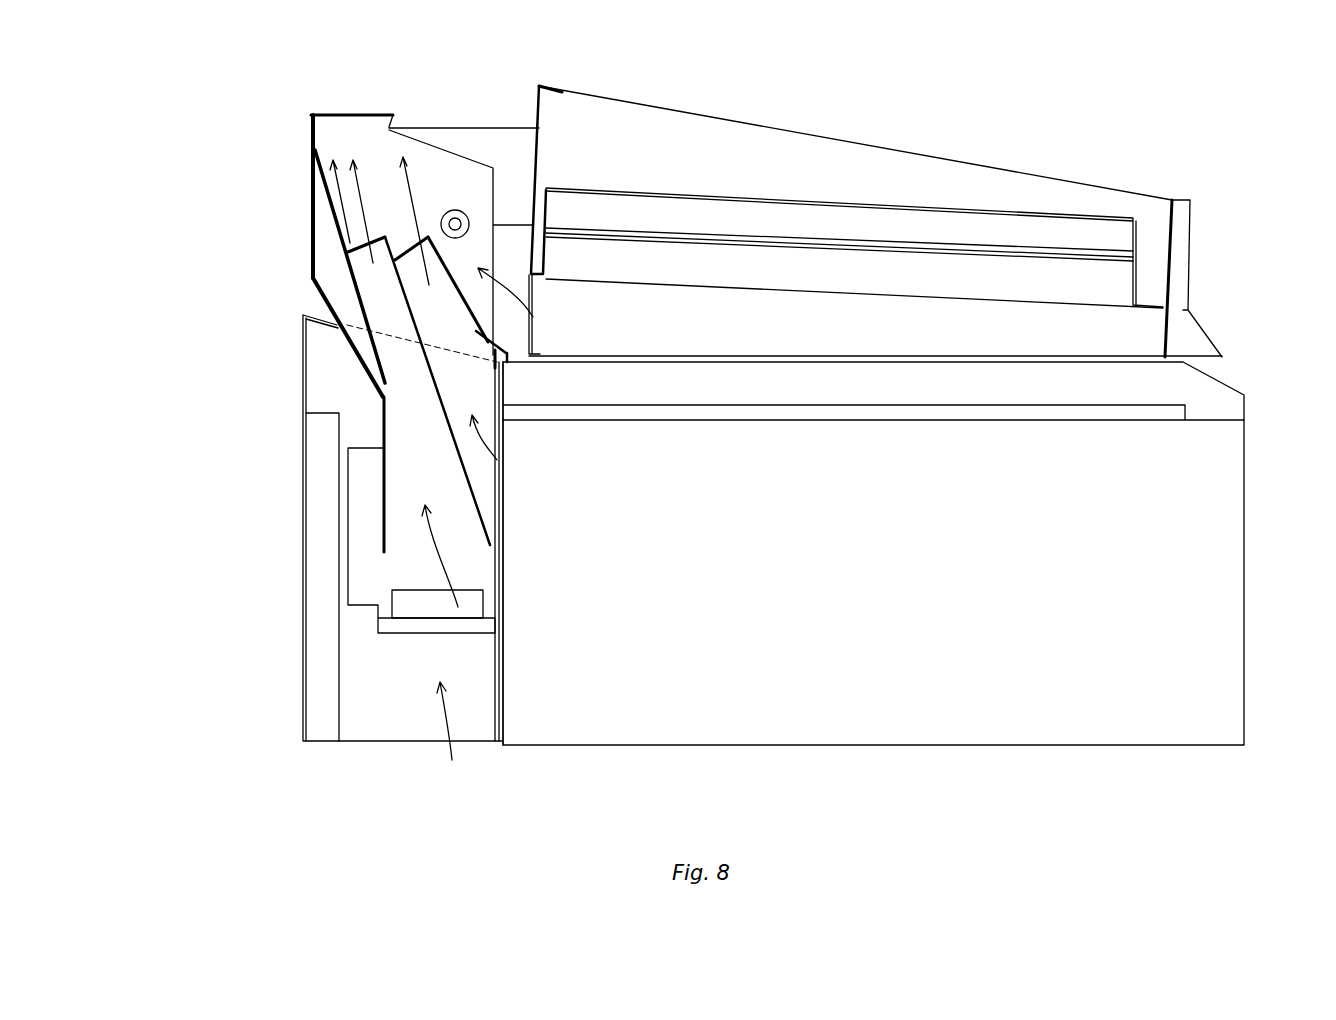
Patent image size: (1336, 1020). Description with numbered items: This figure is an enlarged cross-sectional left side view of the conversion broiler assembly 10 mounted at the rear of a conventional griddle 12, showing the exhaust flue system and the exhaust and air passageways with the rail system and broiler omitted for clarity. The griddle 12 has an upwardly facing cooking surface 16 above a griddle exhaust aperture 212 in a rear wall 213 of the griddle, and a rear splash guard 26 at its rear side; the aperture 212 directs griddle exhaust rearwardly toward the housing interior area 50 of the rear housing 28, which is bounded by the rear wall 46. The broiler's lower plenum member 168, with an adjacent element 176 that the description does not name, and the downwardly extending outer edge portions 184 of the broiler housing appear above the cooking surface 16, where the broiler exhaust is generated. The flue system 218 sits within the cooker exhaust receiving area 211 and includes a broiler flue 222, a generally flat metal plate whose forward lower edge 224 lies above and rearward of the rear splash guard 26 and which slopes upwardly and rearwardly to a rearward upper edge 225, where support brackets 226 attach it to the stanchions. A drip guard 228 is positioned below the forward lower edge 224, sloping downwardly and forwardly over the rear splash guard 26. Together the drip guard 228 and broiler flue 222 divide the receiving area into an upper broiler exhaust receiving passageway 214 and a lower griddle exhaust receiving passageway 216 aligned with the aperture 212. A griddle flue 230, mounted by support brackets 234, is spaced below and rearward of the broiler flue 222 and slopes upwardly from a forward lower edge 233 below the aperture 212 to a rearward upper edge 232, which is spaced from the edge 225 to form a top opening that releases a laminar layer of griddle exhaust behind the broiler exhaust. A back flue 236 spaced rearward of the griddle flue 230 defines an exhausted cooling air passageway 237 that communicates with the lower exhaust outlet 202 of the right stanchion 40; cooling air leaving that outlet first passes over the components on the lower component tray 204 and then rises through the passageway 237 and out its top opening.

The conversion broiler assembly 10 is at (215, 83).
The griddle 12 is at (1208, 507).
The cooking surface 16 is at (1147, 407).
The rear splash guard 26 is at (503, 390).
The rear housing 28 is at (367, 657).
The right stanchion 40 is at (340, 116).
The rear wall 46 is at (305, 485).
The housing interior area 50 is at (358, 413).
The lower plenum member 168 is at (887, 275).
The tray surface 176 is at (835, 293).
The outer edge portions 184 is at (775, 338).
The lower exhaust outlet 202 is at (483, 600).
The lower component tray 204 is at (378, 627).
The cooker exhaust receiving area 211 is at (512, 375).
The griddle exhaust aperture 212 is at (498, 510).
The rear wall of the griddle 213 is at (504, 575).
The upper broiler exhaust receiving passageway 214 is at (497, 313).
The lower griddle exhaust receiving passageway 216 is at (508, 440).
The flue system 218 is at (405, 255).
The broiler flue 222 is at (452, 270).
The forward lower edge 224 is at (497, 330).
The rearward upper edge 225 is at (456, 220).
The support brackets 226 is at (415, 243).
The drip guard 228 is at (513, 343).
The griddle flue 230 is at (357, 367).
The rearward upper edge 232 is at (390, 245).
The forward lower edge 233 is at (492, 542).
The support brackets 234 is at (378, 228).
The back flue 236 is at (330, 226).
The exhausted cooling air passageway 237 is at (382, 433).